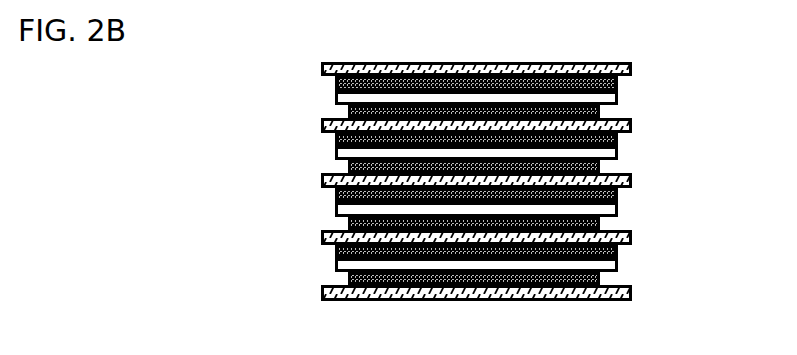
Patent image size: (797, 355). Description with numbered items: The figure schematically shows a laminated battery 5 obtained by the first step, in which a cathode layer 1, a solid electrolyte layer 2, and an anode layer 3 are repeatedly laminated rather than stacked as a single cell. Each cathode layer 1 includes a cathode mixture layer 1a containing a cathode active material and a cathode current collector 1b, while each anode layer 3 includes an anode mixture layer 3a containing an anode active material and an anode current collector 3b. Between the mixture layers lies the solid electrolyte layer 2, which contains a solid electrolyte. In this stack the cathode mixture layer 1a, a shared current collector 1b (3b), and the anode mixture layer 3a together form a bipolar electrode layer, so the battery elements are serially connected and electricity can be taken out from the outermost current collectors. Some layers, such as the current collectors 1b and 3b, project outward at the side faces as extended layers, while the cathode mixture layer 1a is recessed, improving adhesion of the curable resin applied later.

The laminated battery 5 is at (483, 47).
The anode layer 3 is at (475, 153).
The anode current collector 3b is at (321, 67).
The anode mixture layer 3a is at (335, 83).
The solid electrolyte layer 2 is at (335, 98).
The cathode layer 1 is at (475, 213).
The cathode mixture layer 1a is at (348, 111).
The cathode current collector 1b is at (321, 126).